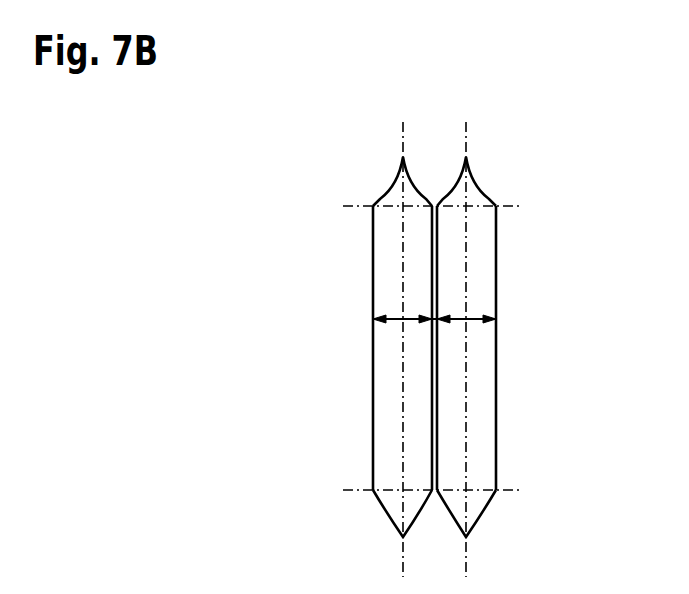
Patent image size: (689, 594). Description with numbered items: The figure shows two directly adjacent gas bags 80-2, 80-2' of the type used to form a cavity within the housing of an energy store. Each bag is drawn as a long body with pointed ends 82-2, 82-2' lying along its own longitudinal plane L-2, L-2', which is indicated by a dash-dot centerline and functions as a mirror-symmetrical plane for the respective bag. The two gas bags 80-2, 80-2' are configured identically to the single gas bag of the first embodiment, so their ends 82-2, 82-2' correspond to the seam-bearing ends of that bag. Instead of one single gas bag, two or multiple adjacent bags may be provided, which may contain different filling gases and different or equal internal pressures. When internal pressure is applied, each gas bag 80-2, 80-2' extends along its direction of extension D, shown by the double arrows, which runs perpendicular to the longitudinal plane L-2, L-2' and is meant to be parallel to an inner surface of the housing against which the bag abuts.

The gas bag 80-2 is at (336, 348).
The gas bag 80-2' is at (535, 348).
The ends of gas bag 82-2 is at (336, 348).
The ends of gas bag 82-2' is at (535, 348).
The longitudinal plane L-2 is at (465, 323).
The longitudinal plane L-2' is at (531, 323).
The direction of extension D is at (397, 320).